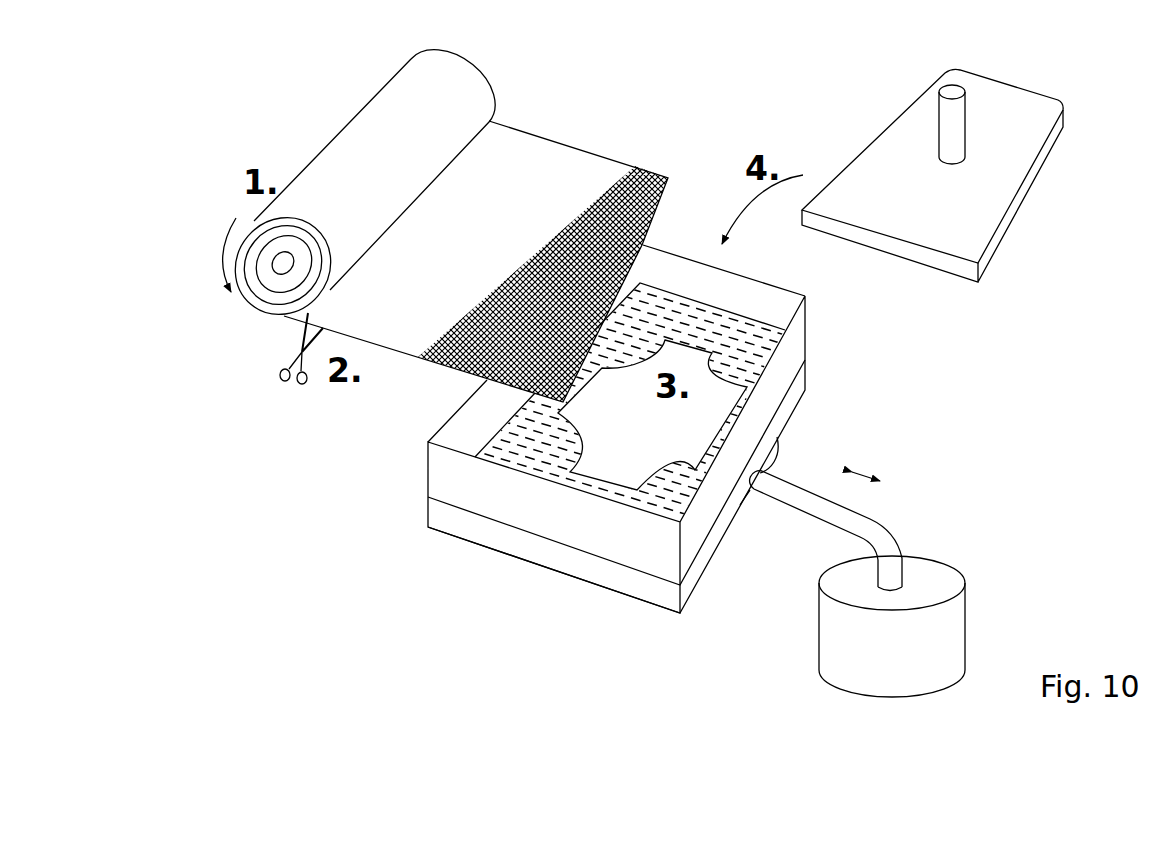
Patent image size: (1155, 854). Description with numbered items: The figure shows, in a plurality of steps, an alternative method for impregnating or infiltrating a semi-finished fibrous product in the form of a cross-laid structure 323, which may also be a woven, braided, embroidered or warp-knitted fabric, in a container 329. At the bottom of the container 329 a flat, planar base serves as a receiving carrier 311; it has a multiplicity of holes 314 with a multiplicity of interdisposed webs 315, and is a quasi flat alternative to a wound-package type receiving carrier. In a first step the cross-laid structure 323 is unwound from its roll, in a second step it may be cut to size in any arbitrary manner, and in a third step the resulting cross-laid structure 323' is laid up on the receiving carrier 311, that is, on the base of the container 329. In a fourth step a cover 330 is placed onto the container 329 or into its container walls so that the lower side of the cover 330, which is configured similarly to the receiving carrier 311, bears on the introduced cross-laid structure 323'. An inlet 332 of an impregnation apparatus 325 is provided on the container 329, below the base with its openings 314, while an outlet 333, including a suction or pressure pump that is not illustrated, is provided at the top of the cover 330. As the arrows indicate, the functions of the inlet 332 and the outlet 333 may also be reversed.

The receiving carrier 311 is at (488, 459).
The holes 314 is at (513, 462).
The webs 315 is at (556, 460).
The cross-laid structure 323 is at (556, 237).
The cross-laid structure 323' is at (652, 415).
The impregnation apparatus 325 is at (950, 578).
The container 329 is at (457, 554).
The cover 330 is at (973, 227).
The inlet 332 is at (782, 490).
The outlet 333 is at (947, 112).